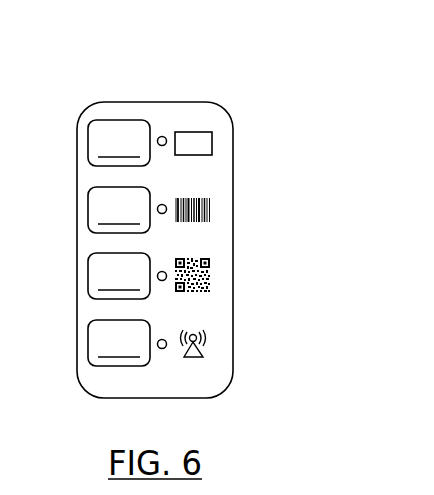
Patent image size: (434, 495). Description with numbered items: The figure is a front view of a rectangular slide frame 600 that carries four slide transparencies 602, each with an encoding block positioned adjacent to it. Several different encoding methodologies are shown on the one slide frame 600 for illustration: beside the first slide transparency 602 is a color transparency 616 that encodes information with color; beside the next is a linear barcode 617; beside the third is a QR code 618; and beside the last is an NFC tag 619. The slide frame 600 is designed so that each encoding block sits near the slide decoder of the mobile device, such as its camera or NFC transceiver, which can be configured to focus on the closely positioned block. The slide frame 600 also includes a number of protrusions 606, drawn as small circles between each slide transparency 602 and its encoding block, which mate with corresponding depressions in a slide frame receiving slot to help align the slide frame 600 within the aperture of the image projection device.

The slide frame 600 is at (120, 76).
The slide transparency 602 is at (119, 243).
The protrusions 606 is at (164, 137).
The color transparency 616 is at (225, 142).
The linear barcode 617 is at (225, 212).
The QR code 618 is at (225, 278).
The NFC tag 619 is at (225, 350).